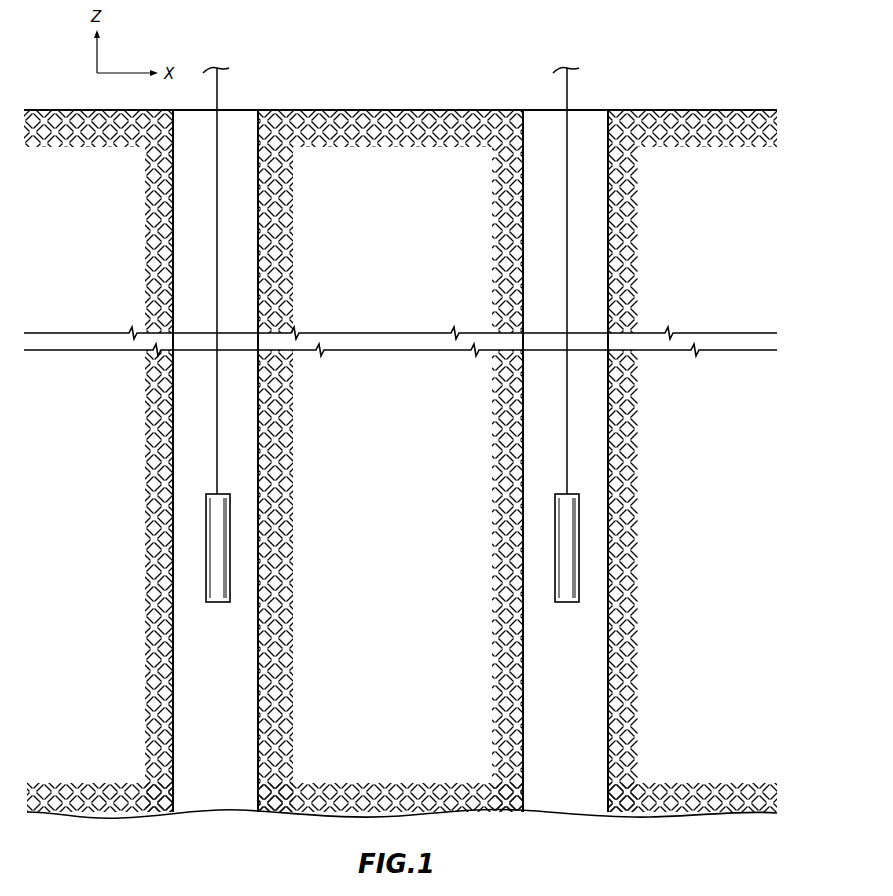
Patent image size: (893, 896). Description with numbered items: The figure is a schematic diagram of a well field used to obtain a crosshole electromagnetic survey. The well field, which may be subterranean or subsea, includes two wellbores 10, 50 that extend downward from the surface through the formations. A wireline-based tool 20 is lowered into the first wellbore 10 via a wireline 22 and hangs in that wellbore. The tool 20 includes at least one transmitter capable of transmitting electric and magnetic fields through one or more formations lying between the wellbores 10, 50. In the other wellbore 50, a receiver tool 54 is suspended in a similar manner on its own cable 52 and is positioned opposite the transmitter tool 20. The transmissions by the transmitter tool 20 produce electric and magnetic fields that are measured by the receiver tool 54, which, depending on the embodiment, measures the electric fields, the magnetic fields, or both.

The wellbore 10 is at (258, 131).
The wireline 22 is at (217, 218).
The tool 20 is at (231, 538).
The wellbore 50 is at (608, 131).
The second wireline cable 52 is at (567, 232).
The receiver tool 54 is at (555, 517).